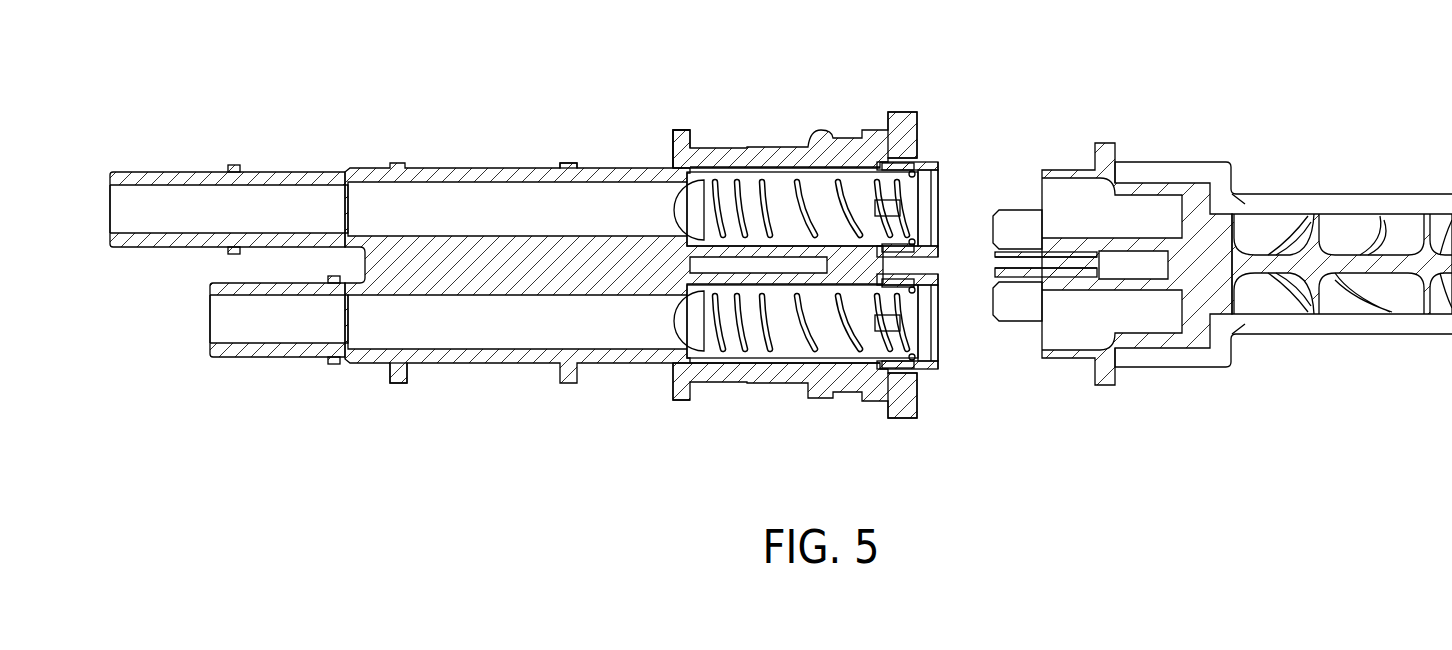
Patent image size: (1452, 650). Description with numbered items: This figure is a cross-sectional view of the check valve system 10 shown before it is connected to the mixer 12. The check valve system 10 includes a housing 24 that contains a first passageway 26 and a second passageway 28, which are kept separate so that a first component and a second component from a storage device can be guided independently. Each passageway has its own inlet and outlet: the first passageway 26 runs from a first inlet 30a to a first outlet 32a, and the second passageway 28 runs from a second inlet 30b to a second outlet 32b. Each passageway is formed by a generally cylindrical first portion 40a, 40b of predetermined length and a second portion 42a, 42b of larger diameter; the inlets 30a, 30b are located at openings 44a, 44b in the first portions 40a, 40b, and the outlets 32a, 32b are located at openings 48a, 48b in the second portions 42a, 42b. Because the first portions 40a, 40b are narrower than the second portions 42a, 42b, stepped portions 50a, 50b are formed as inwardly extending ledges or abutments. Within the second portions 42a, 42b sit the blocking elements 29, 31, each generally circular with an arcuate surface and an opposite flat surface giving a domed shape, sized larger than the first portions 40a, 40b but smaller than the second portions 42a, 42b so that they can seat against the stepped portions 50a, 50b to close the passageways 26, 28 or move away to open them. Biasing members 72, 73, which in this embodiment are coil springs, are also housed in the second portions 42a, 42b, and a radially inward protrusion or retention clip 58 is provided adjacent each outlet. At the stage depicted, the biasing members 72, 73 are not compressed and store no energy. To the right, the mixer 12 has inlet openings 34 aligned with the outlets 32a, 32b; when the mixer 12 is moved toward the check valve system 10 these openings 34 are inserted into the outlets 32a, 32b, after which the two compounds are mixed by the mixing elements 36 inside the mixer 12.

The check valve system 10 is at (680, 130).
The mixer 12 is at (1210, 162).
The housing 24 is at (623, 167).
The first passageway 26 is at (449, 167).
The second passageway 28 is at (625, 364).
The blocking element 29 is at (680, 188).
The blocking element 31 is at (700, 365).
The first inlet 30a is at (109, 195).
The second inlet 30b is at (210, 312).
The first outlet 32a is at (940, 207).
The second outlet 32b is at (940, 350).
The inlet openings 34 is at (1043, 170).
The mixing elements 36 is at (1363, 214).
The first portion 40a is at (525, 168).
The first portion 40b is at (497, 364).
The second portion 42a is at (764, 146).
The second portion 42b is at (773, 380).
The opening 44a is at (110, 223).
The opening 44b is at (210, 340).
The opening 48a is at (940, 205).
The opening 48b is at (940, 323).
The stepped portion 50a is at (672, 172).
The stepped portion 50b is at (672, 363).
The protrusion 58 is at (890, 167).
The biasing member 72 is at (815, 180).
The biasing member 73 is at (803, 365).